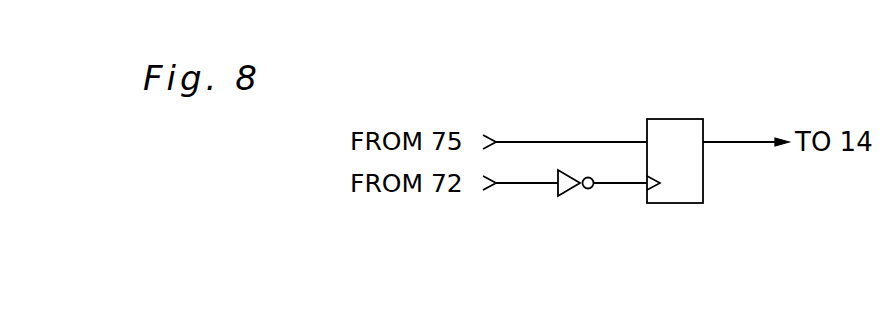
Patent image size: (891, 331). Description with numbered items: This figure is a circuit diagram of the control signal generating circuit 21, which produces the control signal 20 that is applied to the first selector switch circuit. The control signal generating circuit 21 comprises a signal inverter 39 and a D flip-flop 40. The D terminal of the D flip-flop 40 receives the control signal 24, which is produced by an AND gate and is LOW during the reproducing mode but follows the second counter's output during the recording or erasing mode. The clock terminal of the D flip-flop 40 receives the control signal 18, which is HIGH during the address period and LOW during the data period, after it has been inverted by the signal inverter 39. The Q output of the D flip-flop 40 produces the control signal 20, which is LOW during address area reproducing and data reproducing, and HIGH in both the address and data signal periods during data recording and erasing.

The control signal generating circuit 21 is at (708, 72).
The control signal 24 is at (534, 141).
The D flip-flop 40 is at (663, 126).
The control signal 20 is at (743, 140).
The control signal 18 is at (537, 187).
The signal inverter 39 is at (577, 196).